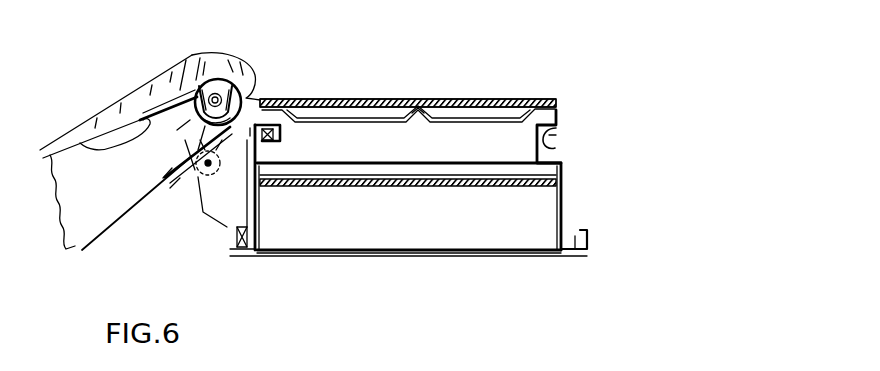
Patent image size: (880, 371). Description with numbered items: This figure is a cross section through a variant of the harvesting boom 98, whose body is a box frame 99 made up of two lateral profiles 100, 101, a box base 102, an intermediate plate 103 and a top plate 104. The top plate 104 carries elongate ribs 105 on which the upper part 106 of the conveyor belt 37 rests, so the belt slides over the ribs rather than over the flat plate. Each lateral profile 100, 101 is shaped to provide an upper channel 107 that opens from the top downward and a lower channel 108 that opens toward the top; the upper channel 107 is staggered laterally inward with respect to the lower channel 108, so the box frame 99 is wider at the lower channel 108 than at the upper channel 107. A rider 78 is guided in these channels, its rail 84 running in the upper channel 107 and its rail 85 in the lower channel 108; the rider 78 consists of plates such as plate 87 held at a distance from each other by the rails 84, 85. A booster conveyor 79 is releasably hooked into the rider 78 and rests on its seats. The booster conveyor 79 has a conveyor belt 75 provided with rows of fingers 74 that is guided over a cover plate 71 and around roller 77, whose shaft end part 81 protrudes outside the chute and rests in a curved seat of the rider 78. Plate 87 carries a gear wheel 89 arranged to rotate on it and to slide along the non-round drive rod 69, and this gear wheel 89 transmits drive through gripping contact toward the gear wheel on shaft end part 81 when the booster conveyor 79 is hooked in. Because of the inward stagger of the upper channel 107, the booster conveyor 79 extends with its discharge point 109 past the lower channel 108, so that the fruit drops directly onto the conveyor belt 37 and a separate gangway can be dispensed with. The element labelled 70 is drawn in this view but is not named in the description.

The conveyor belt 37 is at (384, 99).
The drive rod 69 is at (203, 170).
The roof panel 70 is at (107, 230).
The cover plate 71 is at (85, 120).
The fingers 74 is at (210, 58).
The conveyor belt 75 is at (168, 72).
The roller 77 is at (186, 136).
The rider 78 is at (220, 224).
The booster conveyor 79 is at (140, 216).
The shaft end part 81 is at (218, 96).
The rail 84 is at (281, 135).
The rail 85 is at (242, 249).
The plate 87 is at (205, 212).
The gear wheel 89 is at (224, 173).
The harvesting boom 98 is at (573, 164).
The box frame 99 is at (355, 257).
The lateral profile 100 is at (256, 208).
The lateral profile 101 is at (556, 205).
The box base 102 is at (428, 254).
The intermediate plate 103 is at (450, 162).
The top plate 104 is at (348, 122).
The elongate ribs 105 is at (317, 101).
The upper part of the conveyor belt 106 is at (418, 106).
The upper channel 107 is at (553, 140).
The lower channel 108 is at (577, 236).
The discharge point 109 is at (293, 30).